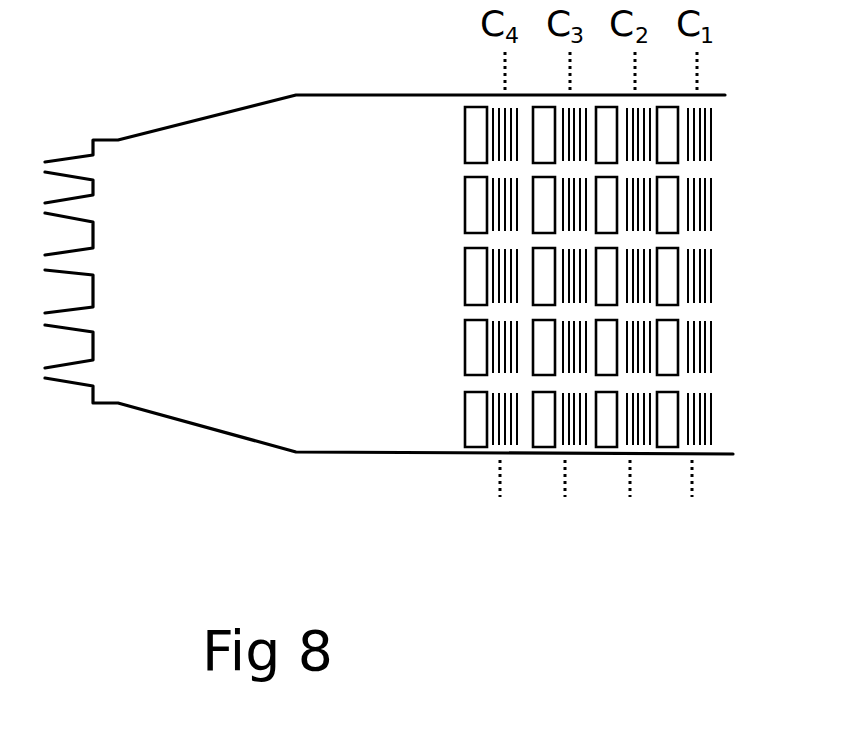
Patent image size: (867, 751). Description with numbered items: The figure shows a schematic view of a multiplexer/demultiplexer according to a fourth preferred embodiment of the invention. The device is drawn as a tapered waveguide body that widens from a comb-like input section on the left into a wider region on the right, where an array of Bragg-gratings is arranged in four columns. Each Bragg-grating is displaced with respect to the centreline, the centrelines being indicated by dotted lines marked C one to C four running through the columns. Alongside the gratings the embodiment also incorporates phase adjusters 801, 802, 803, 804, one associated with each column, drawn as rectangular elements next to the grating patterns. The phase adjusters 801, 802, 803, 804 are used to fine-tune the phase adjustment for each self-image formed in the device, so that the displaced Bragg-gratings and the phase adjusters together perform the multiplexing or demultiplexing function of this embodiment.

The phase adjuster 801 is at (662, 445).
The phase adjuster 802 is at (607, 445).
The phase adjuster 803 is at (540, 445).
The phase adjuster 804 is at (462, 445).